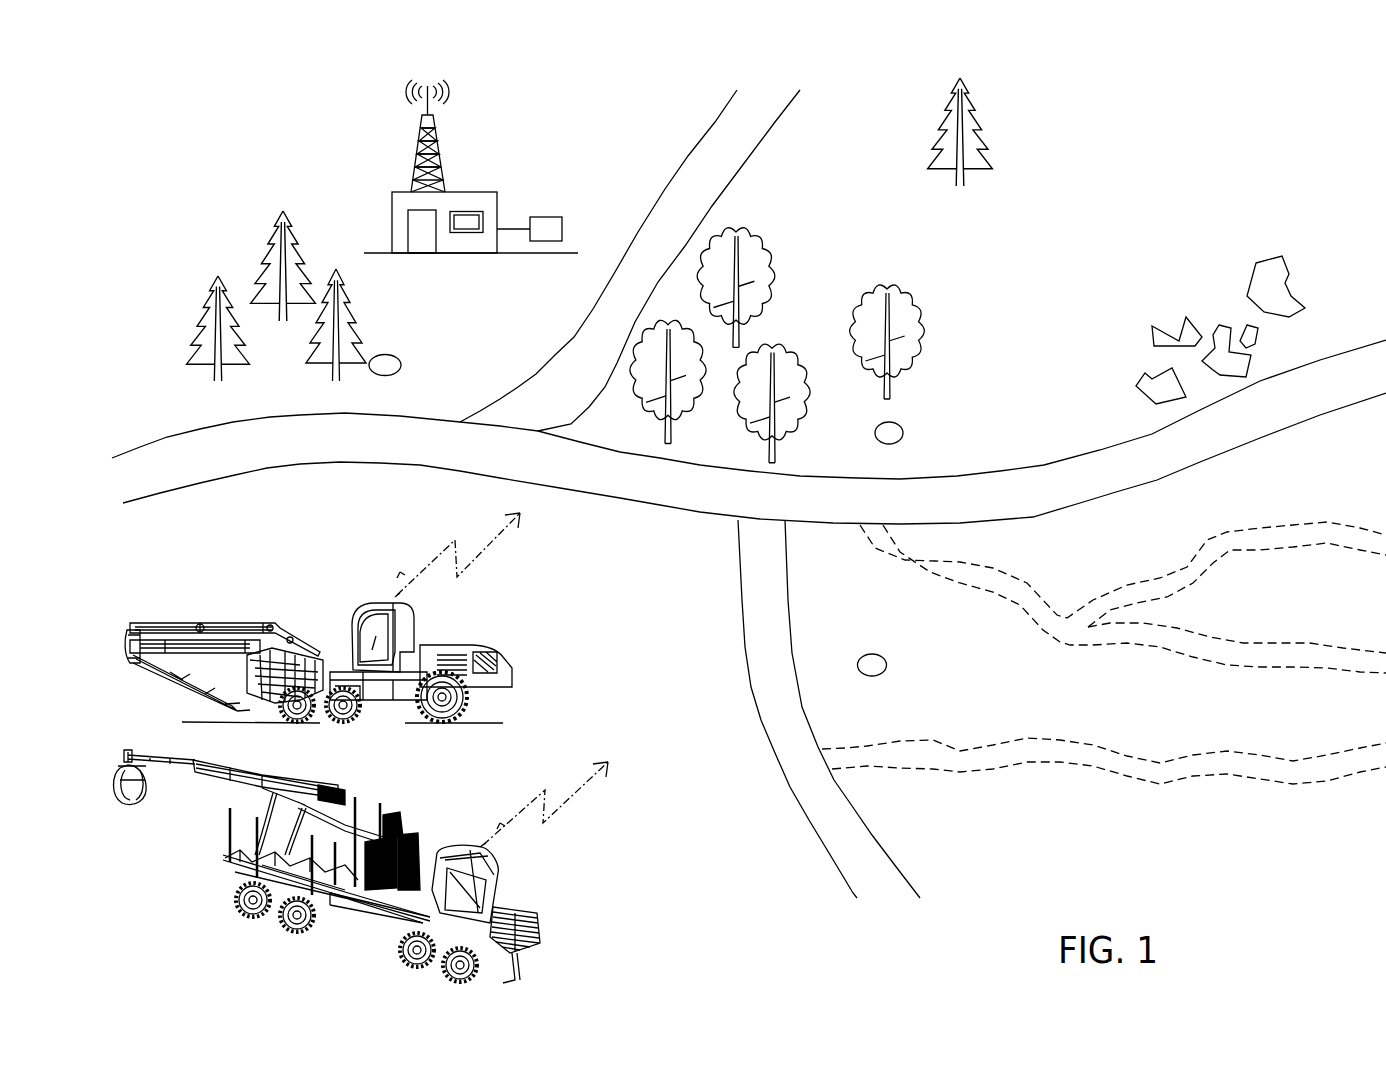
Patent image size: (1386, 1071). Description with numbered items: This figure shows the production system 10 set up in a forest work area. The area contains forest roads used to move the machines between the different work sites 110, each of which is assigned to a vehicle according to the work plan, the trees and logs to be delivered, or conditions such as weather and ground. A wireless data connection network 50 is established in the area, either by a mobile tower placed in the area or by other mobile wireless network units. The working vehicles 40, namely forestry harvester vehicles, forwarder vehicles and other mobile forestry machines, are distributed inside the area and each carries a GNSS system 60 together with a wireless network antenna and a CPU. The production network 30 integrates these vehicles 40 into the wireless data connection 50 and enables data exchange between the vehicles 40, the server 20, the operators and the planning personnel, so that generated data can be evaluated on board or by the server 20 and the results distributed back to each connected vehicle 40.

The production system 10 is at (1157, 168).
The server 20 is at (551, 217).
The production network 30 is at (490, 98).
The working vehicle 40 is at (500, 655).
The wireless data connection network 50 is at (510, 545).
The GNSS system 60 is at (400, 572).
The work site 110 is at (399, 358).